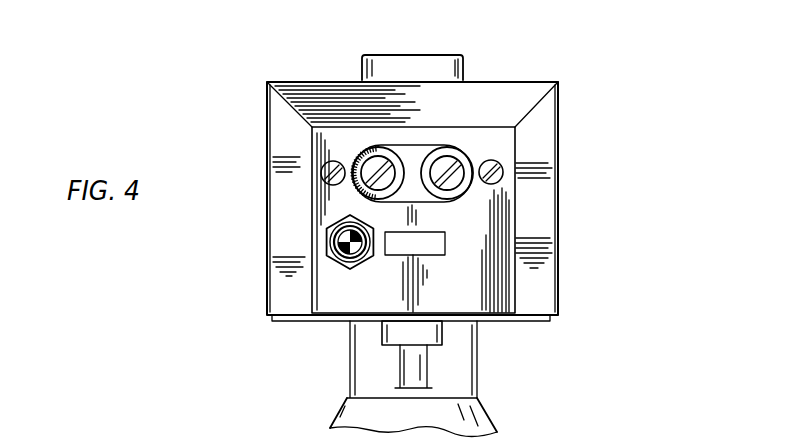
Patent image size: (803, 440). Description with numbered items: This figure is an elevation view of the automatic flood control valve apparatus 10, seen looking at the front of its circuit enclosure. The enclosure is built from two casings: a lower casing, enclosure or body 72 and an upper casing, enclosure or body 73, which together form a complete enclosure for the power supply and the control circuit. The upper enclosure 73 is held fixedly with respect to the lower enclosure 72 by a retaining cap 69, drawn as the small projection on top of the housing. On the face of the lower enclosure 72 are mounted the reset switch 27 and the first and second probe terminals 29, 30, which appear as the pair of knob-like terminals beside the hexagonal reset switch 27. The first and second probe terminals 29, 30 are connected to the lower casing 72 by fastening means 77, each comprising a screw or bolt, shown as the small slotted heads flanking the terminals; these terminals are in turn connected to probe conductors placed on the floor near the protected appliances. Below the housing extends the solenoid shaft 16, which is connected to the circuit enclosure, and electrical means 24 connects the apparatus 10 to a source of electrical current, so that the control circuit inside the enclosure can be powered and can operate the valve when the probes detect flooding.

The apparatus 10 is at (609, 275).
The solenoid shaft 16 is at (463, 388).
The electrical means 24 is at (417, 373).
The reset switch 27 is at (337, 255).
The first probe terminal 29 is at (377, 168).
The second probe terminal 30 is at (448, 168).
The retaining cap 69 is at (431, 67).
The lower enclosure 72 is at (330, 310).
The upper enclosure 73 is at (547, 248).
The fastening means 77 is at (322, 176).